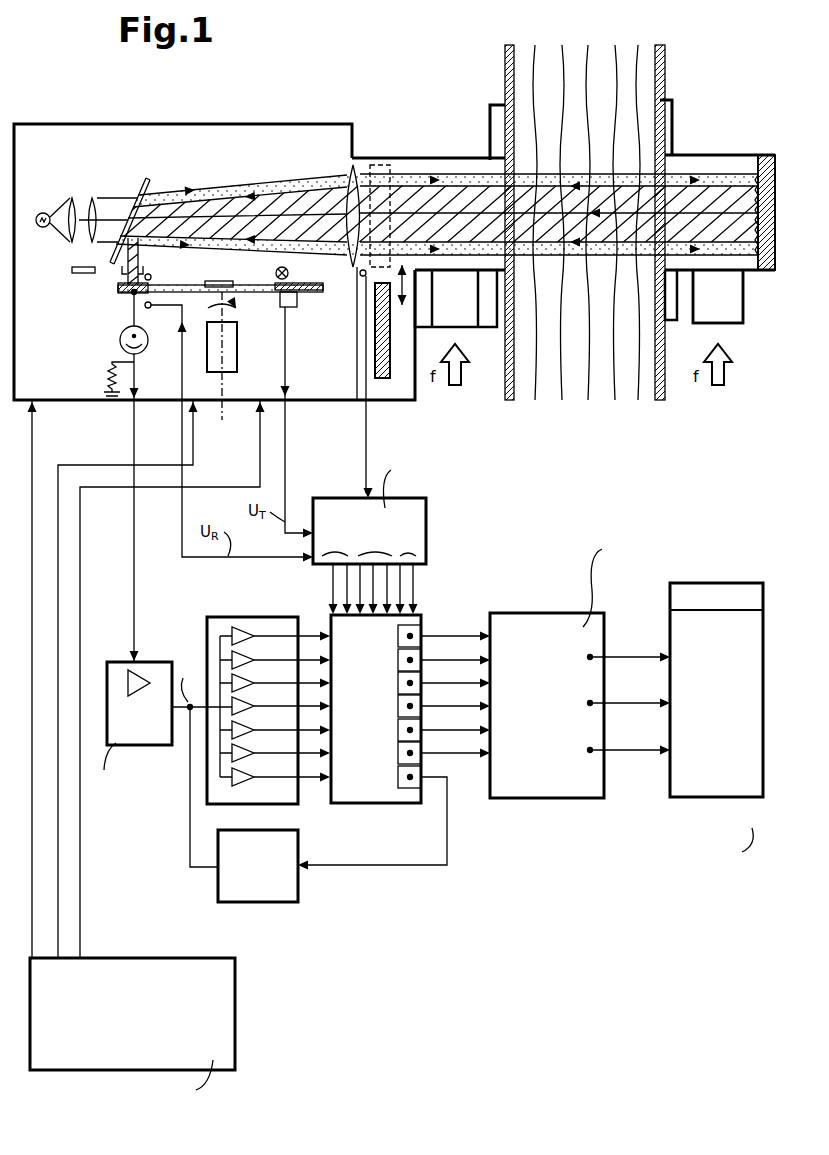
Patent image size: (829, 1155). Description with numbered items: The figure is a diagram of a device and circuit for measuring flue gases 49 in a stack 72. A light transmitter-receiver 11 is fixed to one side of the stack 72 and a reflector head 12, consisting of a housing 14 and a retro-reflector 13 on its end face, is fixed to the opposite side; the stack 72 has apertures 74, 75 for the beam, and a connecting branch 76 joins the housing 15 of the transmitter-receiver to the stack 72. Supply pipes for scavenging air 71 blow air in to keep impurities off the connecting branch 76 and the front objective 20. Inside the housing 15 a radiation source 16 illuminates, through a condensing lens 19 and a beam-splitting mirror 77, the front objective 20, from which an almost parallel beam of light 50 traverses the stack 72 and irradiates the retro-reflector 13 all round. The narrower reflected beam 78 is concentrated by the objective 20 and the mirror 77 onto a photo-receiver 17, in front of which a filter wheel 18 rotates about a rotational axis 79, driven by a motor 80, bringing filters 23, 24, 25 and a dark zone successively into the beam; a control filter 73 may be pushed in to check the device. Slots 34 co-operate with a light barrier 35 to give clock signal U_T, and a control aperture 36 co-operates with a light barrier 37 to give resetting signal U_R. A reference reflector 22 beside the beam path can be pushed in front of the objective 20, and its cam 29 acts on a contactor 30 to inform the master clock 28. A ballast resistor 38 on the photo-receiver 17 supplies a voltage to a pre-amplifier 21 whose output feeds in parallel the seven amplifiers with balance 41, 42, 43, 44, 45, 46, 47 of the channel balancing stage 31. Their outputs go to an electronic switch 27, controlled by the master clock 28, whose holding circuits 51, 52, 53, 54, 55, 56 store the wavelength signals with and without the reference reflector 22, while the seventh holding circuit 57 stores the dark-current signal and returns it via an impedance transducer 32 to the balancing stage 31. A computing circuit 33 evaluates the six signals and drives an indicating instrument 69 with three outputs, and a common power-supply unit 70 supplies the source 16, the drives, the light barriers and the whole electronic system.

The light transmitter-receiver 11 is at (228, 124).
The reflector head 12 is at (740, 155).
The retro-reflector 13 is at (748, 270).
The housing 14 is at (715, 154).
The housing 15 is at (300, 124).
The radiation source 16 is at (40, 213).
The photo-receiver 17 is at (147, 352).
The filter wheel 18 is at (186, 286).
The condensing lens 19 is at (80, 198).
The front objective 20 is at (347, 170).
The pre-amplifier 21 is at (158, 661).
The reference reflector 22 is at (392, 360).
The filter 23 is at (118, 287).
The filter 24 is at (228, 282).
The filter 25 is at (288, 272).
The electronic switch 27 is at (394, 742).
The master clock 28 is at (428, 515).
The cam 29 is at (369, 398).
The contactor 30 is at (360, 280).
The channel balancing stage 31 is at (268, 691).
The impedance transducer 32 is at (370, 893).
The computing circuit 33 is at (580, 628).
The slots 34 is at (285, 320).
The light barrier 35 is at (293, 308).
The control aperture 36 is at (133, 294).
The light barrier 37 is at (151, 277).
The ballast resistor 38 is at (108, 376).
The amplifier with balance 41 is at (254, 636).
The amplifier with balance 42 is at (254, 660).
The amplifier with balance 43 is at (254, 683).
The amplifier with balance 44 is at (254, 706).
The amplifier with balance 45 is at (254, 730).
The amplifier with balance 46 is at (254, 753).
The amplifier with balance 47 is at (254, 777).
The flue gases 49 is at (588, 324).
The beam of light 50 is at (375, 165).
The holding circuit 51 is at (398, 638).
The holding circuit 52 is at (398, 662).
The holding circuit 53 is at (398, 685).
The holding circuit 54 is at (398, 708).
The holding circuit 55 is at (398, 732).
The holding circuit 56 is at (398, 755).
The holding circuit 57 is at (398, 779).
The indicating instrument 69 is at (707, 797).
The power supply 70 is at (237, 992).
The supply pipes for scavenging air 71 is at (463, 322).
The stack 72 is at (665, 385).
The control filter 73 is at (72, 271).
The aperture 74 is at (493, 158).
The aperture 75 is at (665, 162).
The connecting branch 76 is at (455, 158).
The beam-splitting mirror 77 is at (147, 178).
The reflected beam 78 is at (708, 246).
The rotational axis 79 is at (223, 400).
The motor 80 is at (232, 350).